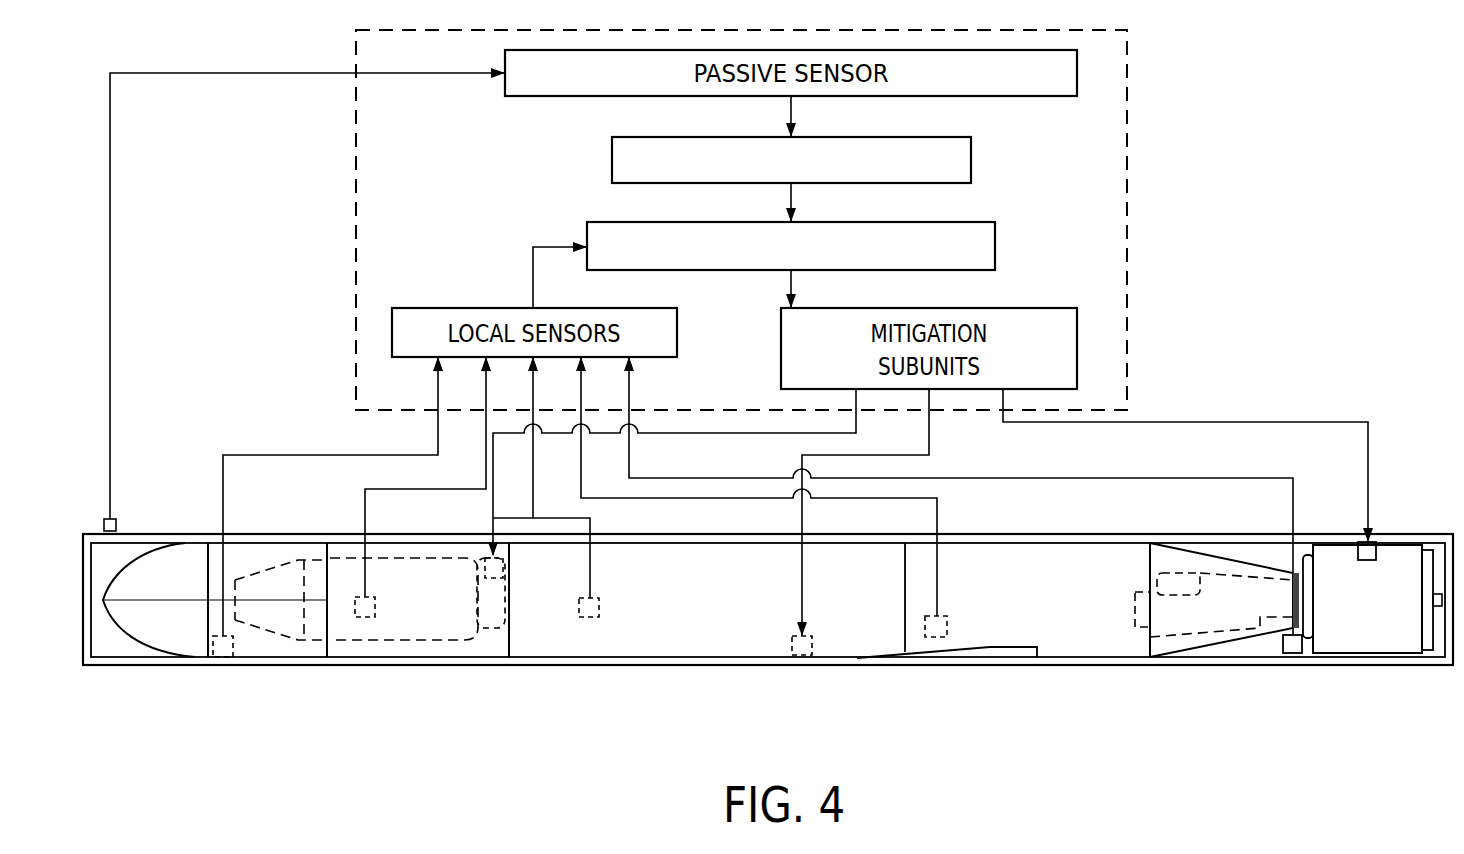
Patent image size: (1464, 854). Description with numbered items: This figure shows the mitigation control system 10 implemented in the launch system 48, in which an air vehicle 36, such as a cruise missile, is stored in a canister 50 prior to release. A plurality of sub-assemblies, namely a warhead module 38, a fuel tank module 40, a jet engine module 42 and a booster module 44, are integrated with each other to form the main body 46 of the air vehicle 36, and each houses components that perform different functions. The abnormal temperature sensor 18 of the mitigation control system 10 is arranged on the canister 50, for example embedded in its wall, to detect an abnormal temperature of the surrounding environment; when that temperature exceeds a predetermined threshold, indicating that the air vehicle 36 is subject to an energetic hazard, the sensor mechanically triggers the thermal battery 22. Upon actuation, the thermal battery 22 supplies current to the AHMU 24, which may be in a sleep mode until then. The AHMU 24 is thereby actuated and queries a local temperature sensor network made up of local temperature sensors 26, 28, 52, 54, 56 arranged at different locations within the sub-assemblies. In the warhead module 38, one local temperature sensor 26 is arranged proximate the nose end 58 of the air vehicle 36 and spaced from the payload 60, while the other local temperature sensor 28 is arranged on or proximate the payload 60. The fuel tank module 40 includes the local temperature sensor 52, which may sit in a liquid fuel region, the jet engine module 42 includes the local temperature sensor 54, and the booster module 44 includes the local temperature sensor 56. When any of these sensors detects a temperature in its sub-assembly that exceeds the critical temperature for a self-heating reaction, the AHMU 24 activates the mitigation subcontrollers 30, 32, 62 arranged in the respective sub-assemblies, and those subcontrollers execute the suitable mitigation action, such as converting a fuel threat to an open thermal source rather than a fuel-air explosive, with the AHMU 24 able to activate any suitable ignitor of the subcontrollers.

The mitigation control system 10 is at (355, 202).
The abnormal temperature sensor 18 is at (117, 523).
The thermal battery 22 is at (610, 158).
The AHMU 24 is at (996, 245).
The local temperature sensor 26 is at (217, 657).
The local temperature sensor 28 is at (362, 617).
The mitigation subcontroller 30 is at (492, 578).
The mitigation subcontroller 32 is at (800, 655).
The air vehicle 36 is at (1253, 544).
The warhead module 38 is at (430, 627).
The fuel tank module 40 is at (857, 658).
The jet engine module 42 is at (1207, 605).
The booster module 44 is at (1375, 618).
The main body 46 is at (426, 530).
The launch system 48 is at (327, 524).
The canister 50 is at (205, 533).
The local temperature sensor 52 is at (583, 617).
The local temperature sensor 54 is at (933, 637).
The local temperature sensor 56 is at (1290, 655).
The nose end 58 is at (125, 637).
The payload 60 is at (342, 628).
The mitigation subcontroller 62 is at (1377, 553).